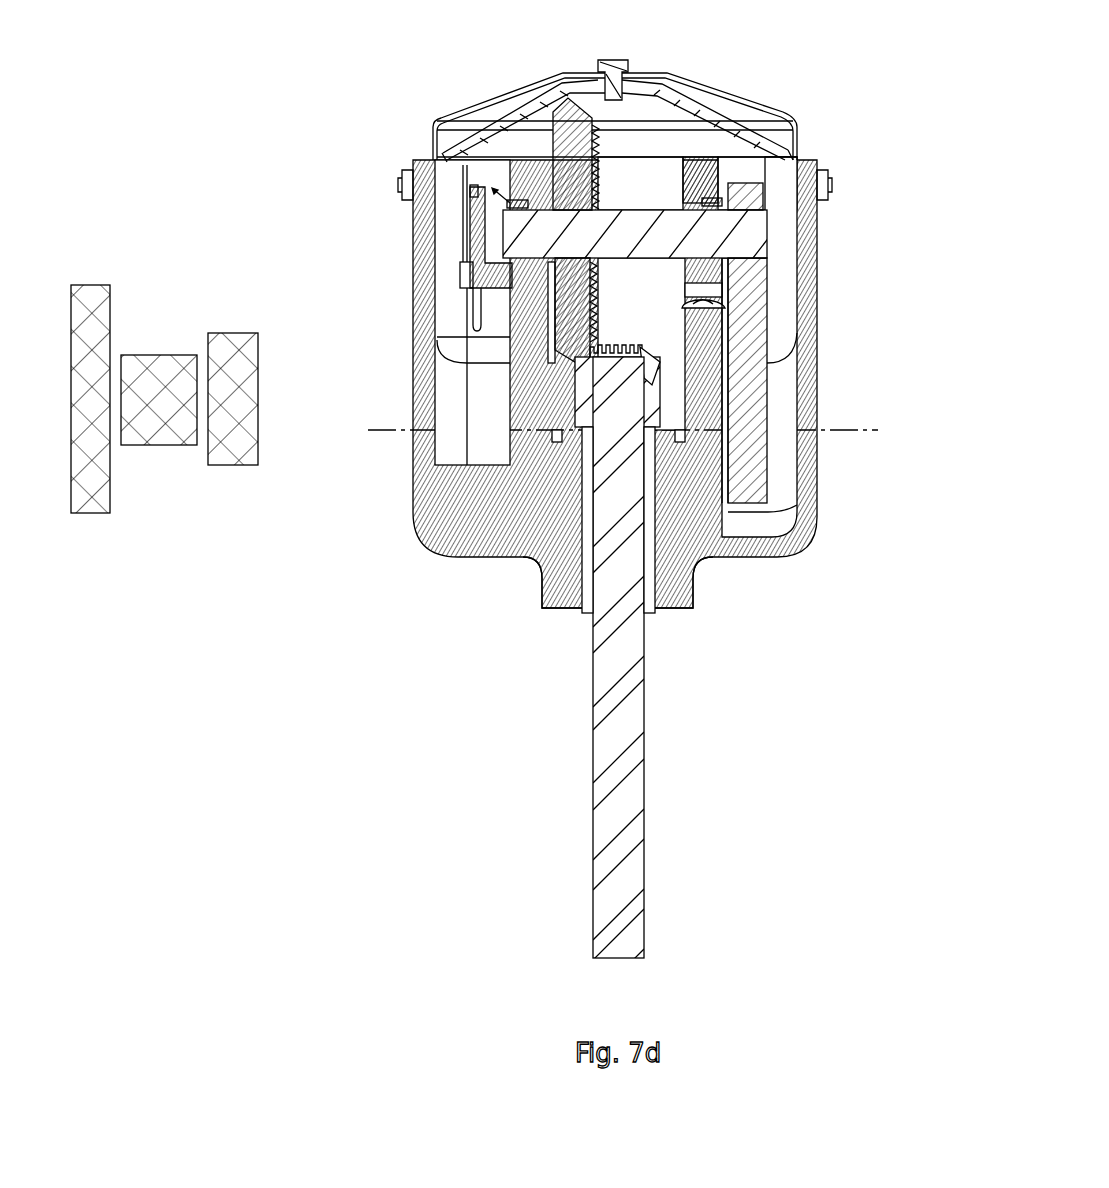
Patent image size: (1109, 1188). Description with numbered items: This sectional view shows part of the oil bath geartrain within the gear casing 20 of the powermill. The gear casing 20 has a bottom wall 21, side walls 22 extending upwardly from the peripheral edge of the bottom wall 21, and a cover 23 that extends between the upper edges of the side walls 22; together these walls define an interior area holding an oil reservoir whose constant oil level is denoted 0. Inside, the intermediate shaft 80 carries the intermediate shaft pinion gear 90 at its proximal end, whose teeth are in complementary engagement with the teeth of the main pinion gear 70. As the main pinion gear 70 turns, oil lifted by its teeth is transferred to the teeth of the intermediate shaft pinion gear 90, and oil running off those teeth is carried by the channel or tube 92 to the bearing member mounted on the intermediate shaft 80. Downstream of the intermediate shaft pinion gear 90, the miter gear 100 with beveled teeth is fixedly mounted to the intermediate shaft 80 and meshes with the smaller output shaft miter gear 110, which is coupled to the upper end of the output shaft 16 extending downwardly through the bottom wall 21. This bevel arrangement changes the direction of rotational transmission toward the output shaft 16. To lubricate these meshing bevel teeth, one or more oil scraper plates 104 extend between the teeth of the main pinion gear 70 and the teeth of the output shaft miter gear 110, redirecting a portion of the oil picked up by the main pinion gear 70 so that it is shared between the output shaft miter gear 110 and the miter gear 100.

The oil level 0 is at (857, 440).
The output shaft 16 is at (623, 723).
The gear casing 20 is at (832, 100).
The bottom wall 21 is at (745, 557).
The side walls 22 is at (817, 305).
The cover 23 is at (670, 72).
The main pinion gear 70 is at (758, 412).
The intermediate shaft 80 is at (643, 222).
The intermediate shaft pinion gear 90 is at (750, 202).
The channel or tube 92 is at (715, 197).
The miter gear 100 is at (585, 108).
The oil scraper plates 104 is at (650, 343).
The output shaft miter gear 110 is at (622, 348).